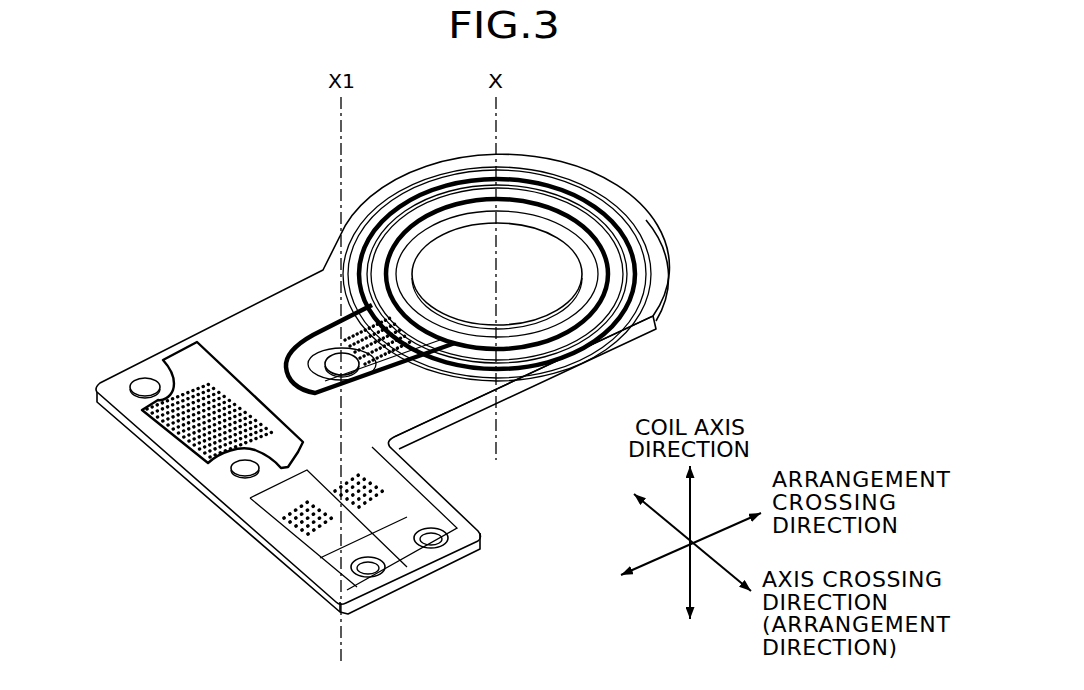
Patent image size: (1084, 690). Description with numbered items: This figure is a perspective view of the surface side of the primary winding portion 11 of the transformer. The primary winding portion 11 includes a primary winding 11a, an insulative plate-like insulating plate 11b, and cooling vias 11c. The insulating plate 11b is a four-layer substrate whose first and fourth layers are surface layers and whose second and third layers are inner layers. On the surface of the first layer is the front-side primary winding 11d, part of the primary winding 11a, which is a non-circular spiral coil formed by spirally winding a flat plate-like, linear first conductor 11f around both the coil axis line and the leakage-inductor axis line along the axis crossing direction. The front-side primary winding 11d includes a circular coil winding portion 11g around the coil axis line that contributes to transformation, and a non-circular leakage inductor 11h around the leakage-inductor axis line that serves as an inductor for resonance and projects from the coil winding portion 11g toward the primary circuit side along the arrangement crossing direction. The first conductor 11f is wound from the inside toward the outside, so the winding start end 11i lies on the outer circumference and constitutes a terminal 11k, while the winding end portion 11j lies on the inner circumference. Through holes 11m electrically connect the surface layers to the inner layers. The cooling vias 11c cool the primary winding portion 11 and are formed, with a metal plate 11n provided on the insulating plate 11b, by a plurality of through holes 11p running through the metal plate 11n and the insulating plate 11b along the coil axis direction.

The primary winding portion 11 is at (553, 141).
The primary winding 11a is at (551, 245).
The insulating plate 11b is at (561, 357).
The cooling vias 11c is at (227, 404).
The front-side primary winding 11d is at (527, 267).
The first conductor 11f is at (595, 208).
The coil winding portion 11g is at (654, 234).
The leakage inductor 11h is at (413, 373).
The winding start end 11i is at (426, 518).
The winding end portion 11j is at (427, 330).
The terminal 11k is at (433, 522).
The through holes 11m is at (405, 328).
The metal plate 11n is at (191, 377).
The through holes 11p is at (192, 383).